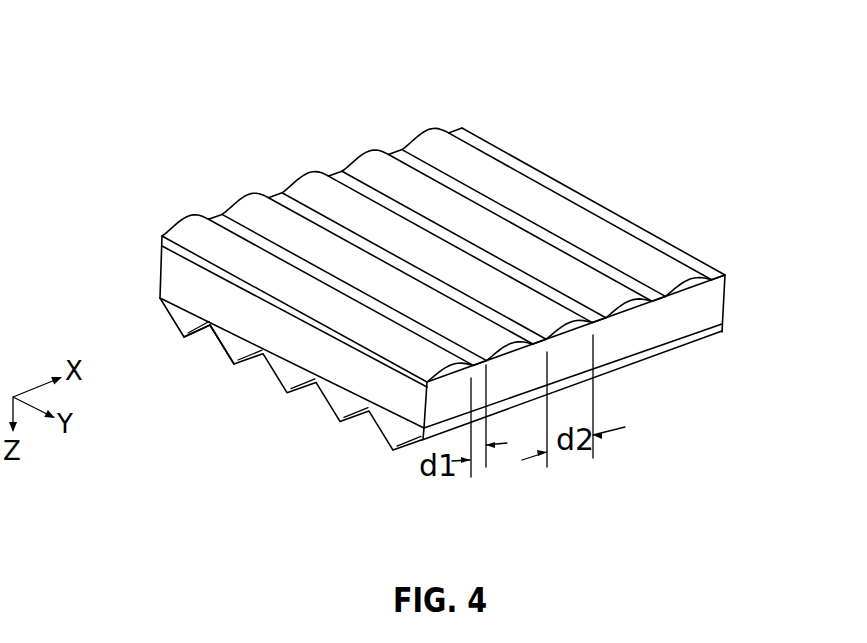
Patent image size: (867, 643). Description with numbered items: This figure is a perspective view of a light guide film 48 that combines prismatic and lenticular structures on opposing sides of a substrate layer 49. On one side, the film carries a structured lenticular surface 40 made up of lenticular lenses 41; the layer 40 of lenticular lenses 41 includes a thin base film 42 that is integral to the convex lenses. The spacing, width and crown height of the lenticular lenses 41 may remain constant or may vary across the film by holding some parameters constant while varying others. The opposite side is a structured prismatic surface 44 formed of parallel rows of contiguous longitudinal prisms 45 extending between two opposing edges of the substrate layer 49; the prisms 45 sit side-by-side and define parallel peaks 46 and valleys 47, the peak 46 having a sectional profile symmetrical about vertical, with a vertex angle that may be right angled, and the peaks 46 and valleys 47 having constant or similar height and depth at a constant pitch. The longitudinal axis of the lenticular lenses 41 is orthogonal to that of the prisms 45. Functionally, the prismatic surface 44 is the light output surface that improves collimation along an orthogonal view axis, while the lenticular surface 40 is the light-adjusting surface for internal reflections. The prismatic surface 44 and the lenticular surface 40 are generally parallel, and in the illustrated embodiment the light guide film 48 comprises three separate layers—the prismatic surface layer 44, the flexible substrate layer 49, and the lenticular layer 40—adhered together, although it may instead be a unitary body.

The structured lenticular surface 40 is at (730, 275).
The lenticular lenses 41 is at (639, 250).
The thin base film 42 is at (659, 301).
The structured prismatic surface 44 is at (731, 326).
The longitudinal prisms 45 is at (347, 402).
The peaks 46 is at (233, 371).
The valleys 47 is at (207, 339).
The light guide film 48 is at (651, 86).
The substrate layer 49 is at (186, 271).